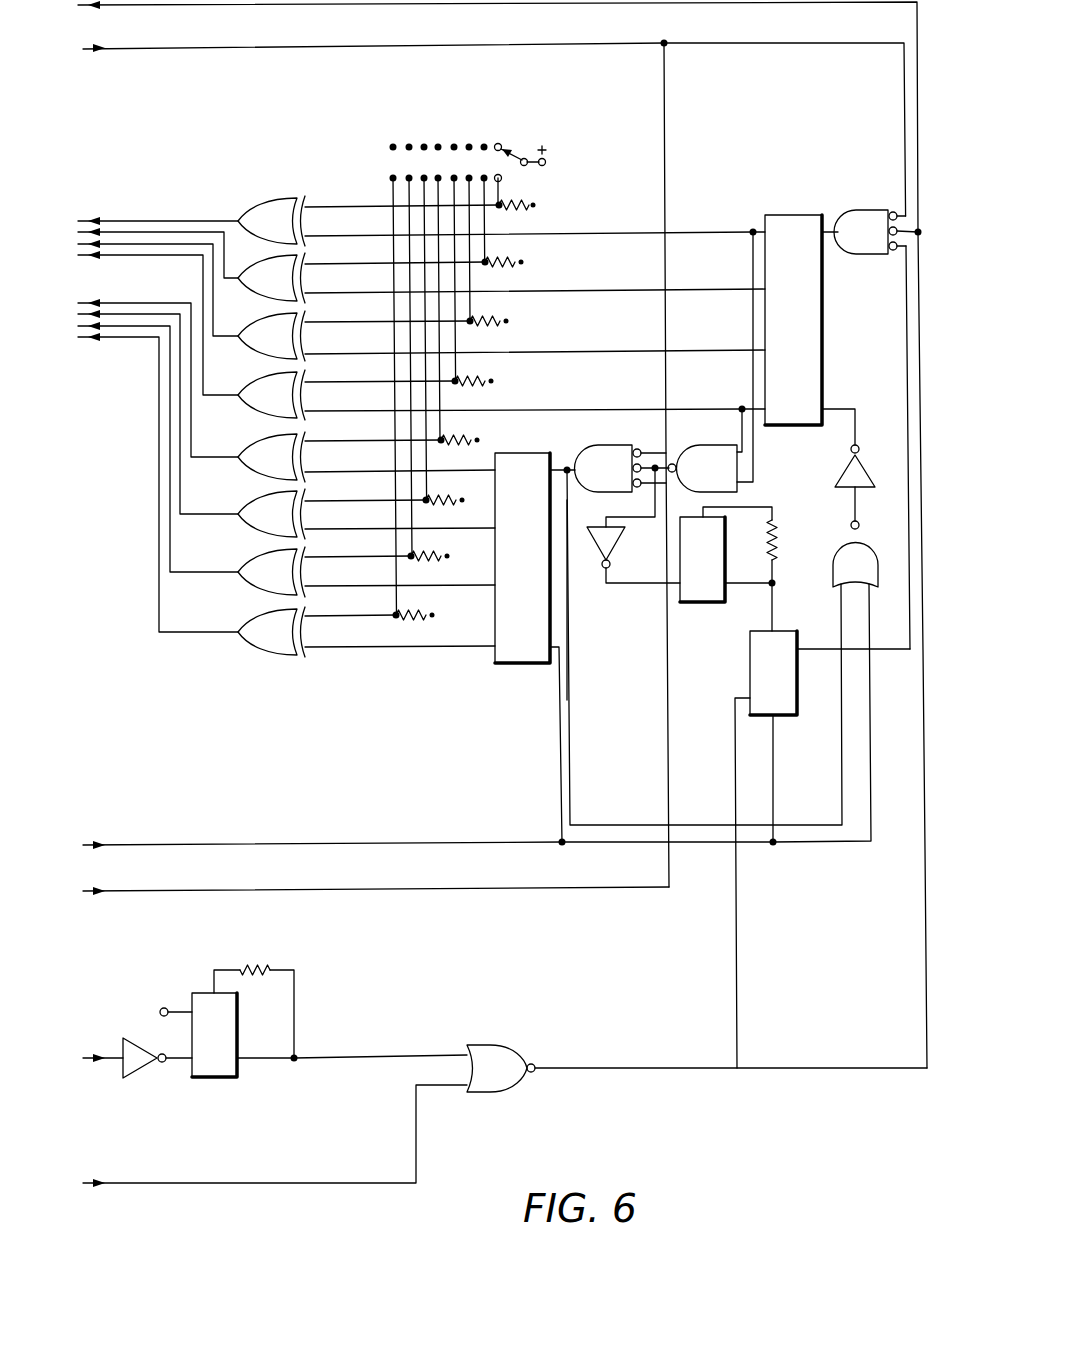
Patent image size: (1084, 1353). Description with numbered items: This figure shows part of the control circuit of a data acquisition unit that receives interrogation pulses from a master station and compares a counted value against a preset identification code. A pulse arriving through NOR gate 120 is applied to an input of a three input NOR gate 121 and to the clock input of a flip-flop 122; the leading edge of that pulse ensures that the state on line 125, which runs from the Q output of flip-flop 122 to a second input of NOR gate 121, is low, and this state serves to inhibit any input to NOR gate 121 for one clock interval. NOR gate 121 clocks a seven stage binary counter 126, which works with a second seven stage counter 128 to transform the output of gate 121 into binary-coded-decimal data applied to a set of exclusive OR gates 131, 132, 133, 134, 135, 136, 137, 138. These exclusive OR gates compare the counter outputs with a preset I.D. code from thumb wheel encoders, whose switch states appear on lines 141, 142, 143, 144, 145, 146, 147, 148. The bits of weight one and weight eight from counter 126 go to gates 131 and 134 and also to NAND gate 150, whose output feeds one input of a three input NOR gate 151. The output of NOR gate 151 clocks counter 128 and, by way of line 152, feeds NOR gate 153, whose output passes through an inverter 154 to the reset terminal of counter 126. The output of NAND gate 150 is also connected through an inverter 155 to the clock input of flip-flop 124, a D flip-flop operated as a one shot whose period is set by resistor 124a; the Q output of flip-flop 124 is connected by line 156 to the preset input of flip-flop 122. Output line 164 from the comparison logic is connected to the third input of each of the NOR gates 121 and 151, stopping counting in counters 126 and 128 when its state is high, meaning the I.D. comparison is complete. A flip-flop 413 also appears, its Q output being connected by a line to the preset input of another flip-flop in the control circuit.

The output line 164 is at (420, 48).
The exclusive OR gate 131 is at (246, 212).
The exclusive OR gate 132 is at (299, 276).
The exclusive OR gate 133 is at (299, 335).
The exclusive OR gate 134 is at (299, 395).
The exclusive OR gate 135 is at (301, 456).
The exclusive OR gate 136 is at (301, 515).
The exclusive OR gate 137 is at (301, 571).
The exclusive OR gate 138 is at (301, 632).
The line 141 is at (498, 185).
The line 142 is at (484, 245).
The line 143 is at (469, 303).
The line 144 is at (455, 364).
The line 145 is at (440, 424).
The line 146 is at (426, 481).
The line 147 is at (411, 538).
The line 148 is at (396, 598).
The seven stage binary counter 126 is at (776, 202).
The seven stage counter 128 is at (498, 453).
The three input NOR gate 121 is at (846, 210).
The three input NOR gate 151 is at (590, 445).
The NAND gate 150 is at (686, 445).
The inverter 155 is at (618, 540).
The inverter 154 is at (833, 475).
The flip-flop 124 is at (725, 540).
The resistor 124a is at (775, 542).
The line 156 is at (772, 606).
The NOR gate 153 is at (833, 576).
The line 152 is at (568, 600).
The flip-flop 122 is at (750, 645).
The line 125 is at (898, 649).
The flip-flop 413 is at (190, 993).
The NOR gate 120 is at (515, 1054).